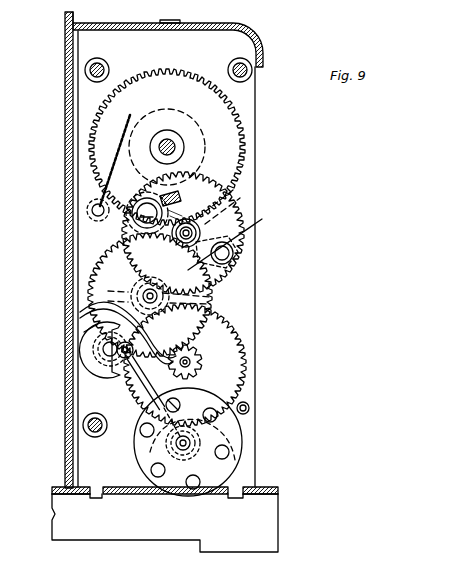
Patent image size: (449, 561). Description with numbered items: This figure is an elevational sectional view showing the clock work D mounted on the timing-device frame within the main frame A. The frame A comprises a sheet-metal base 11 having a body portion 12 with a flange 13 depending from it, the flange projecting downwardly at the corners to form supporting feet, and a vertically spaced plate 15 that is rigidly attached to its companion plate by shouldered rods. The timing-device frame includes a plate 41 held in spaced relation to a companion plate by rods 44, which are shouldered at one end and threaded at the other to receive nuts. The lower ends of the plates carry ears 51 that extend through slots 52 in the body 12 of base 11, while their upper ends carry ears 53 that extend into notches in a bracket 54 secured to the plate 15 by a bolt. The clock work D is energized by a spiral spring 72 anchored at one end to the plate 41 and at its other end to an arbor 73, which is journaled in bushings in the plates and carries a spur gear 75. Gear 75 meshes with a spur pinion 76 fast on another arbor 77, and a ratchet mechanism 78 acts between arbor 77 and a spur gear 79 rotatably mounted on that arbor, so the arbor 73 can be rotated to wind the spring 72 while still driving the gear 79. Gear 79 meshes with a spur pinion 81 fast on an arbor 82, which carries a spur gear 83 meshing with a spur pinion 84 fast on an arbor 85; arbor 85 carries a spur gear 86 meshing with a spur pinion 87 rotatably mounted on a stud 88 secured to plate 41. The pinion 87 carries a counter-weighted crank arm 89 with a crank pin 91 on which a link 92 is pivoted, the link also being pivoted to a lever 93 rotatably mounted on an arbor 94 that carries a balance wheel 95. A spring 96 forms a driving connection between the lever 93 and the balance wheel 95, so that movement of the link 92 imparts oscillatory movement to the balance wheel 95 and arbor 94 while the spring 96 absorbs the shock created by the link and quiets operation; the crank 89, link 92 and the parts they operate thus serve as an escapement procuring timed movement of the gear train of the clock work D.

The frame A is at (66, 27).
The base 11 is at (278, 487).
The body portion 12 is at (54, 486).
The flange 13 is at (58, 541).
The plate 15 is at (65, 45).
The plate 41 is at (245, 95).
The rods 44 is at (100, 66).
The ears 51 is at (95, 498).
The slots 52 is at (70, 495).
The ears 53 is at (172, 21).
The bracket 54 is at (250, 29).
The spiral spring 72 is at (128, 144).
The arbor 73 is at (167, 130).
The spur gear 75 is at (230, 138).
The clock work D is at (230, 120).
The spur pinion 76 is at (245, 197).
The arbor 77 is at (187, 231).
The ratchet mechanism 78 is at (238, 240).
The spur gear 79 is at (226, 250).
The spur pinion 81 is at (108, 291).
The arbor 82 is at (151, 293).
The spur gear 83 is at (107, 273).
The spur pinion 84 is at (190, 357).
The arbor 85 is at (193, 370).
The spur gear 86 is at (240, 388).
The spur pinion 87 is at (117, 330).
The stud 88 is at (103, 350).
The counter-weighted crank arm 89 is at (86, 362).
The crank pin 91 is at (132, 360).
The link 92 is at (157, 388).
The lever 93 is at (245, 462).
The arbor 94 is at (183, 450).
The balance wheel 95 is at (190, 497).
The spring 96 is at (128, 520).